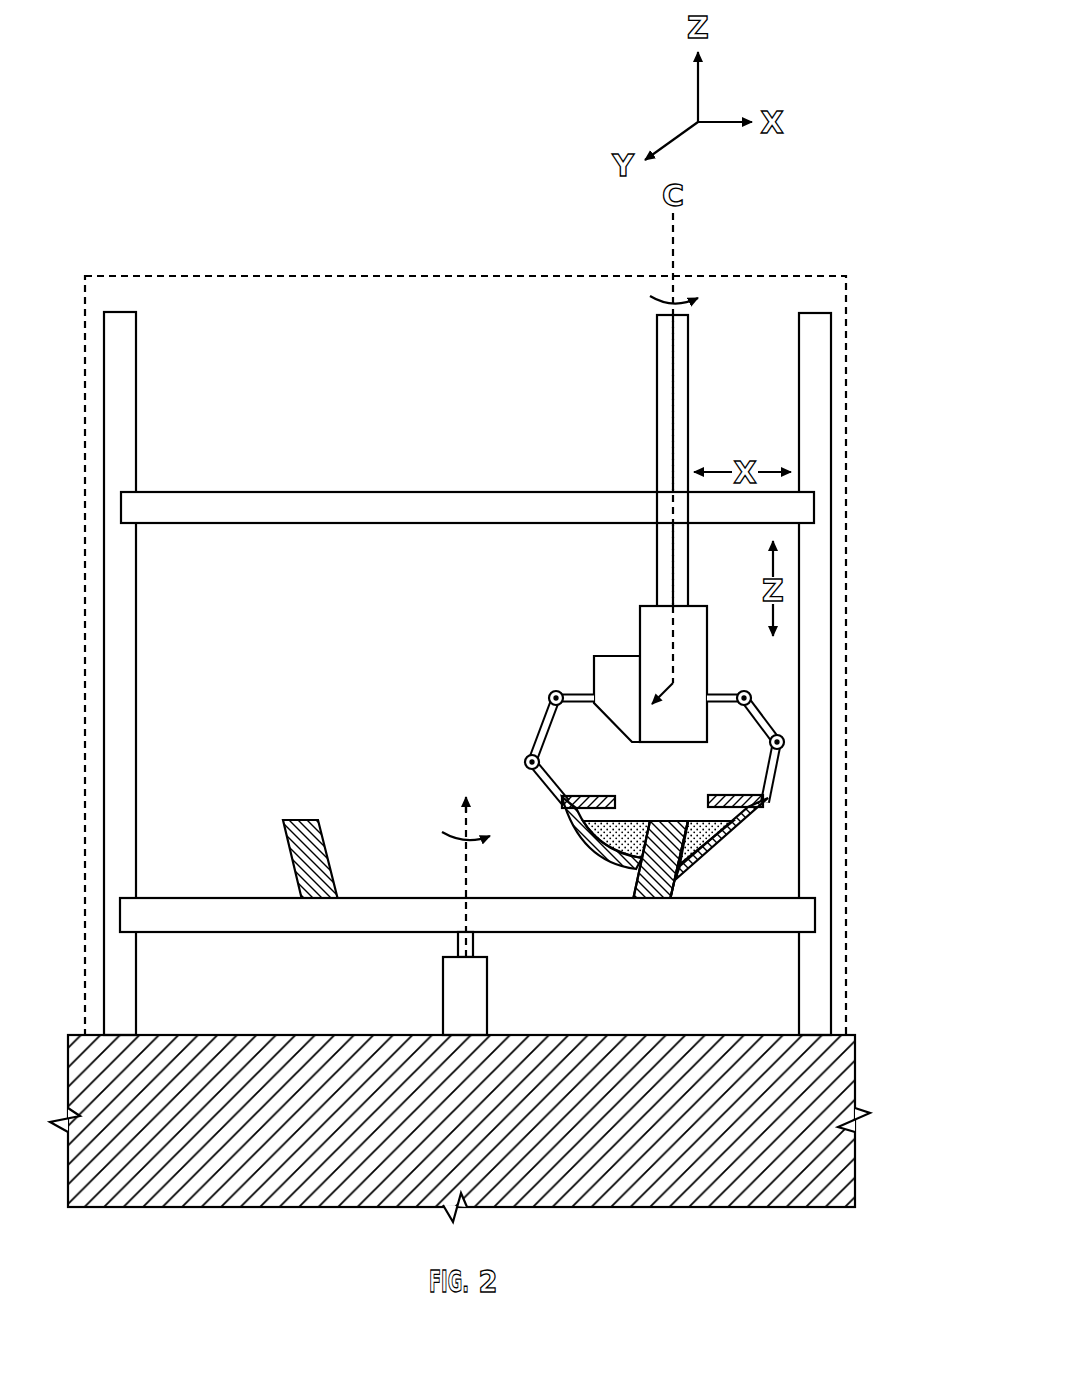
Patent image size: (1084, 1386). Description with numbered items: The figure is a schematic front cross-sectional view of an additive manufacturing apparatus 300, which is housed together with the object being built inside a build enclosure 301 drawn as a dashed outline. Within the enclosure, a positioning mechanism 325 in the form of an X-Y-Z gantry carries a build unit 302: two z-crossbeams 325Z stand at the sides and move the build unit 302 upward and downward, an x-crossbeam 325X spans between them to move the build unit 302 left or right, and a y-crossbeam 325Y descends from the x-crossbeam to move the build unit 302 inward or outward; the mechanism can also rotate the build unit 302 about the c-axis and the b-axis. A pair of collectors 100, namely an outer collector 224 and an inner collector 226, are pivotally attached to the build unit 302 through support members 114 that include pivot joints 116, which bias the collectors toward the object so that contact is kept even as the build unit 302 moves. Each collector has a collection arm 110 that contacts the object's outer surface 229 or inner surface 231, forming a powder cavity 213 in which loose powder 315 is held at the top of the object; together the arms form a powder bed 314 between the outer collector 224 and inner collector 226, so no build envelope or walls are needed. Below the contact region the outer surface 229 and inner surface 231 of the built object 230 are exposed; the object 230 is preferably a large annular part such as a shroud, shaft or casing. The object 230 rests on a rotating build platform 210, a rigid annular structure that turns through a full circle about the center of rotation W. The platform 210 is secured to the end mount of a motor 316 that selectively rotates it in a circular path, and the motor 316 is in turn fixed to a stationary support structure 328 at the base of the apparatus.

The additive manufacturing apparatus 300 is at (481, 214).
The build enclosure 301 is at (226, 271).
The positioning mechanism 325 is at (522, 628).
The z-crossbeams 325Z is at (137, 410).
The x-crossbeam 325X is at (792, 512).
The y-crossbeam 325Y is at (657, 375).
The build unit 302 is at (653, 622).
The pivot joint 116 is at (556, 690).
The support members 114 is at (543, 722).
The collectors 100 is at (700, 801).
The collection arm 110 is at (608, 843).
The inner collector 226 is at (587, 796).
The outer collector 224 is at (752, 815).
The loose powder 315 is at (723, 829).
The powder cavity 213 is at (634, 837).
The powder bed 314 is at (703, 833).
The inner surface 231 is at (630, 888).
The outer surface 229 is at (678, 888).
The built object 230 is at (298, 820).
The rotating build platform 210 is at (205, 917).
The motor 316 is at (488, 995).
The stationary support structure 328 is at (666, 1165).